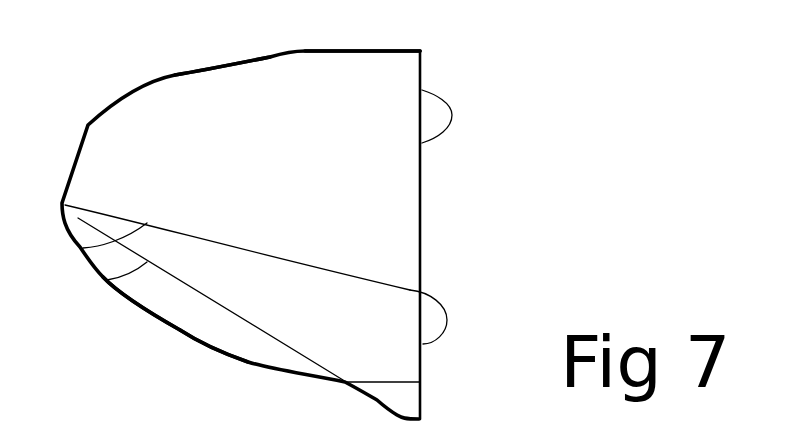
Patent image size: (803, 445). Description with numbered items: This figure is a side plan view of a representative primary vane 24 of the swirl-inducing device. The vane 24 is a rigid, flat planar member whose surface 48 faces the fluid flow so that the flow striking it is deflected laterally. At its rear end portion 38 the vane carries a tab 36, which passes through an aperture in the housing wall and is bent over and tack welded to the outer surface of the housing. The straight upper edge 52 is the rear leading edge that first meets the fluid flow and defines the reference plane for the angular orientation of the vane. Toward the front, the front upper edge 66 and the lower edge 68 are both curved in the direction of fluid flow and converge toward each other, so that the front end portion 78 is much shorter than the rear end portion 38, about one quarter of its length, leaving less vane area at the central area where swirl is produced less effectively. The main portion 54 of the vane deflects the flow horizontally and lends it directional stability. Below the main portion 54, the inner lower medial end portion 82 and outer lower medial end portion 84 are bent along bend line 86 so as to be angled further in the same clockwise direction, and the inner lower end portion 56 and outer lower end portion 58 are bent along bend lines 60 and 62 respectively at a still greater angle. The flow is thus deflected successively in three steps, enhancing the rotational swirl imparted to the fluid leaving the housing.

The primary vane 24 is at (423, 86).
The tab 36 is at (453, 117).
The rear end portion 38 is at (400, 163).
The surface 48 is at (145, 124).
The upper edge 52 is at (358, 50).
The main portion 54 is at (287, 243).
The inner lower end portion 56 is at (187, 322).
The outer lower end portion 58 is at (408, 398).
The bend line 60 is at (107, 280).
The bend line 62 is at (377, 353).
The front upper edge 66 is at (183, 75).
The lower edge 68 is at (245, 365).
The front end portion 78 is at (114, 189).
The inner lower medial end portion 82 is at (232, 277).
The outer lower medial end portion 84 is at (390, 378).
The bend line 86 is at (83, 248).